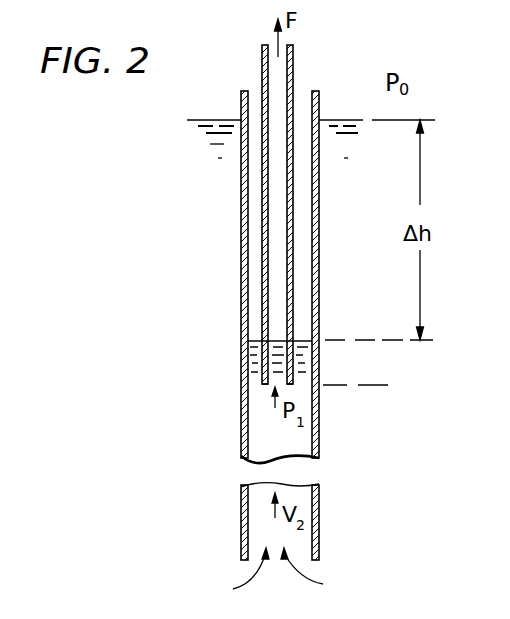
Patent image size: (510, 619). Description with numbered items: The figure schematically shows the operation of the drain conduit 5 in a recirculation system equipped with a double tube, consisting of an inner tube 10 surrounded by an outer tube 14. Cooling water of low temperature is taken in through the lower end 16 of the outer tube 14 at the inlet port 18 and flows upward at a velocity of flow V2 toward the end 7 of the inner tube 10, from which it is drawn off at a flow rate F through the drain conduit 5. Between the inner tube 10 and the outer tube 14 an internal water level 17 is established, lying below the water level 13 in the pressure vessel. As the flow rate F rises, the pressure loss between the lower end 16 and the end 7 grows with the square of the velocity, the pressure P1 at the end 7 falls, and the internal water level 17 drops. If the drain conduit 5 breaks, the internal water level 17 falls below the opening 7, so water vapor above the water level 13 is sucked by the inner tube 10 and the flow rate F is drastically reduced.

The drain conduit 5 is at (244, 214).
The end of the inner tube 7 is at (277, 372).
The inner tube 10 is at (262, 270).
The water level 13 is at (333, 118).
The outer tube 14 is at (241, 237).
The lower end of the outer tube 16 is at (298, 543).
The internal water level 17 is at (247, 338).
The inlet port 18 is at (256, 515).